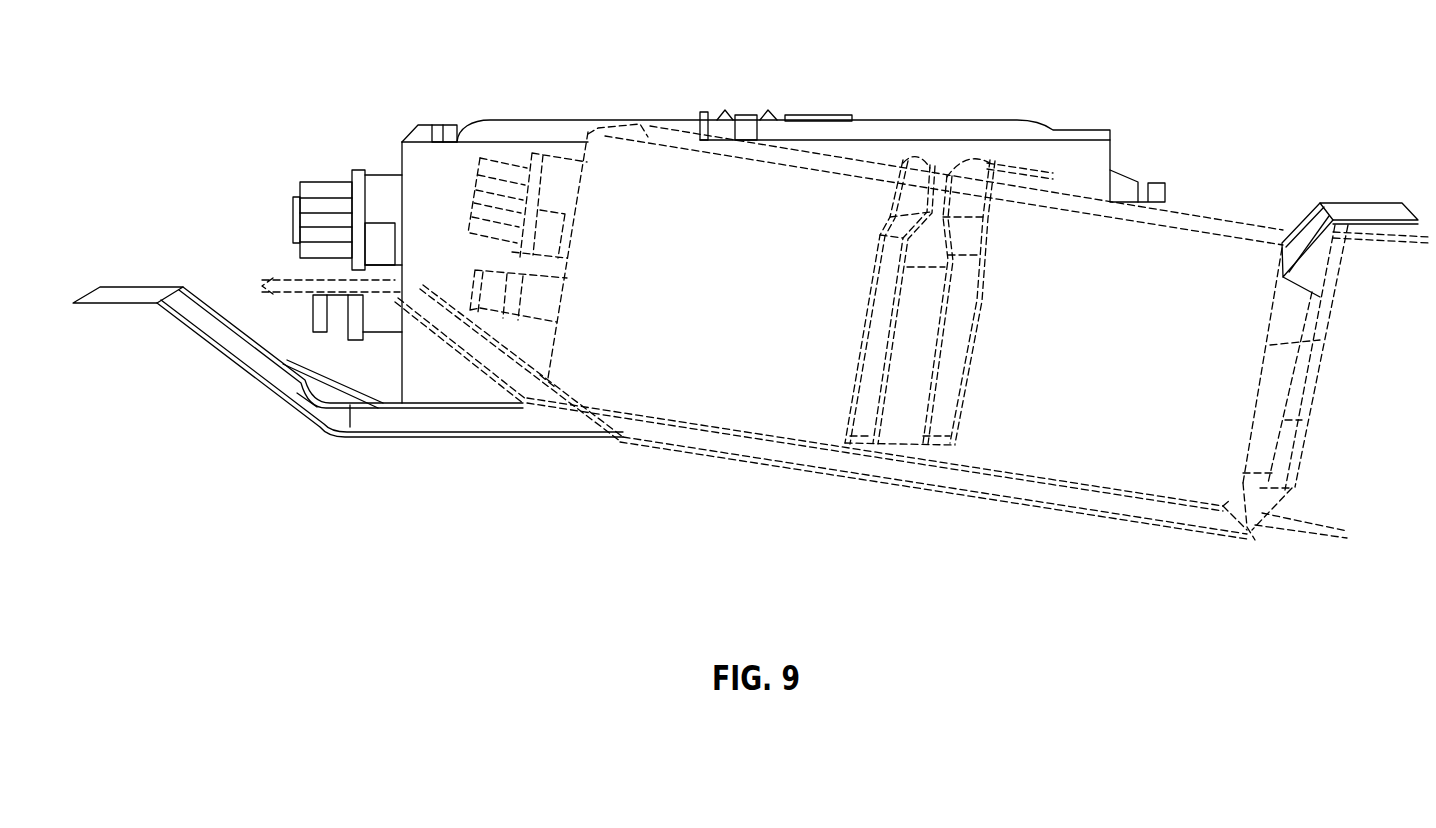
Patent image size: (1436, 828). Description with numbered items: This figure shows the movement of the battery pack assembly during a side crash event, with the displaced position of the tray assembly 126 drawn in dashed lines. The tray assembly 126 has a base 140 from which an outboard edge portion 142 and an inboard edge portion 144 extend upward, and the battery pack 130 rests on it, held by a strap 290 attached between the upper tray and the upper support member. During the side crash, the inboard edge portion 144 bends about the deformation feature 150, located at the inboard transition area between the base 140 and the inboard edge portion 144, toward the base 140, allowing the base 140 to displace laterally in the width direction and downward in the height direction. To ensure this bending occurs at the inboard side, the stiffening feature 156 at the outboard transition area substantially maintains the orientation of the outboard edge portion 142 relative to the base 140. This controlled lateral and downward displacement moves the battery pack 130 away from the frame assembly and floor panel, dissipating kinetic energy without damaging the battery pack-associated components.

The tray assembly 126 is at (487, 437).
The battery pack 130 is at (878, 150).
The base 140 is at (555, 437).
The outboard edge portion 142 is at (223, 360).
The inboard edge portion 144 is at (1320, 215).
The deformation feature 150 is at (1250, 537).
The stiffening feature 156 is at (313, 397).
The strap 290 is at (747, 130).